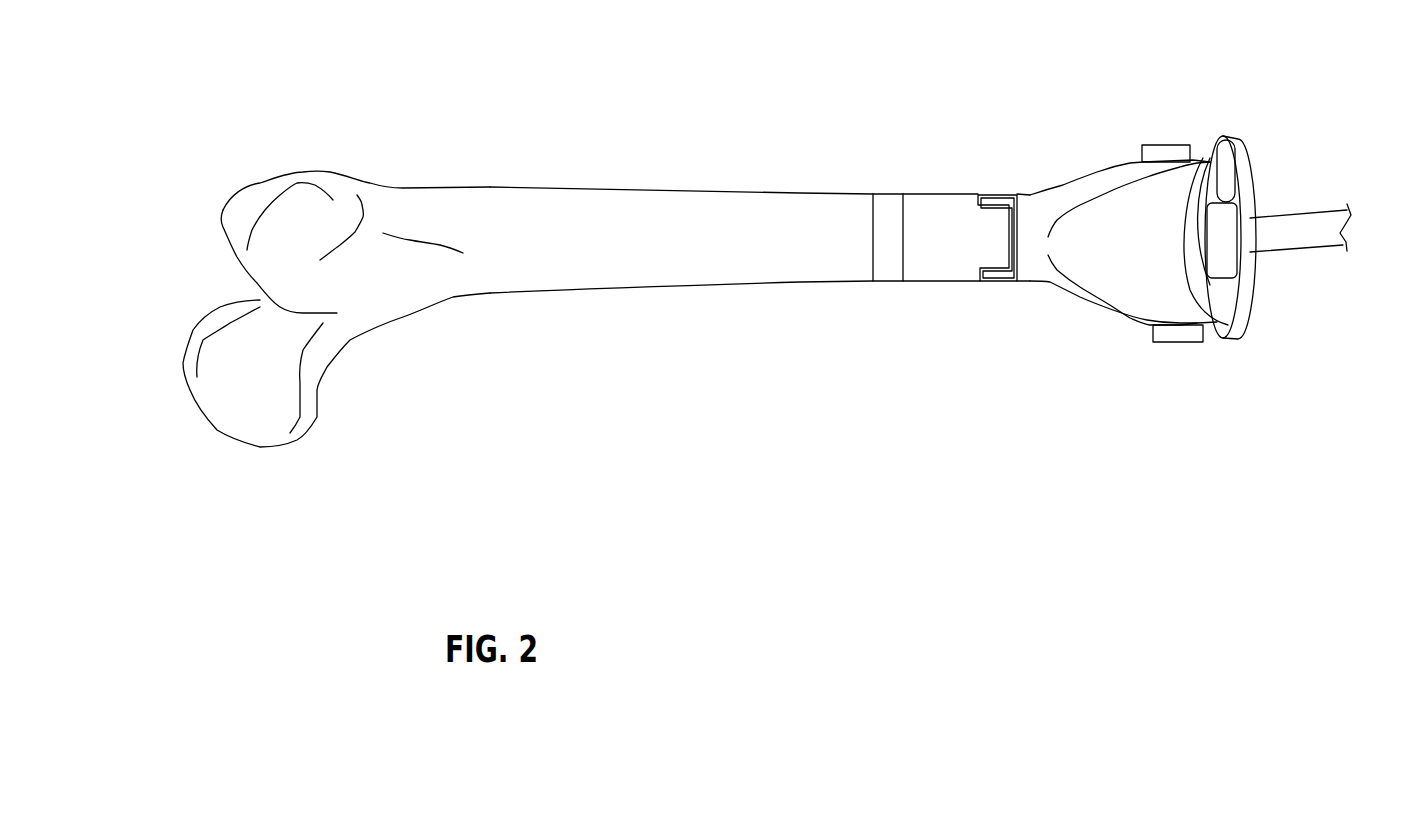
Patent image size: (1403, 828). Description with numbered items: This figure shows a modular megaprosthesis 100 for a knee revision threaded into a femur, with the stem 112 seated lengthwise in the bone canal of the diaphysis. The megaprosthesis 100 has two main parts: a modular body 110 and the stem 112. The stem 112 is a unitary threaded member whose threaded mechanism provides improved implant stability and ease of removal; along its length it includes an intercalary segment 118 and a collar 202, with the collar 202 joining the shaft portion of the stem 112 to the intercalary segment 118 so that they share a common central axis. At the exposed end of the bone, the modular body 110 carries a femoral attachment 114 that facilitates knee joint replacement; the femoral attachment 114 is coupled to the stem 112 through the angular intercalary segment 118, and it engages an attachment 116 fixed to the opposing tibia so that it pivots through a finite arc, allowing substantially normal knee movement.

The megaprosthesis 100 is at (940, 383).
The modular body 110 is at (1025, 258).
The stem 112 is at (885, 182).
The femoral attachment 114 is at (1228, 182).
The attachment 116 is at (1198, 272).
The intercalary segment 118 is at (998, 228).
The collar 202 is at (887, 262).